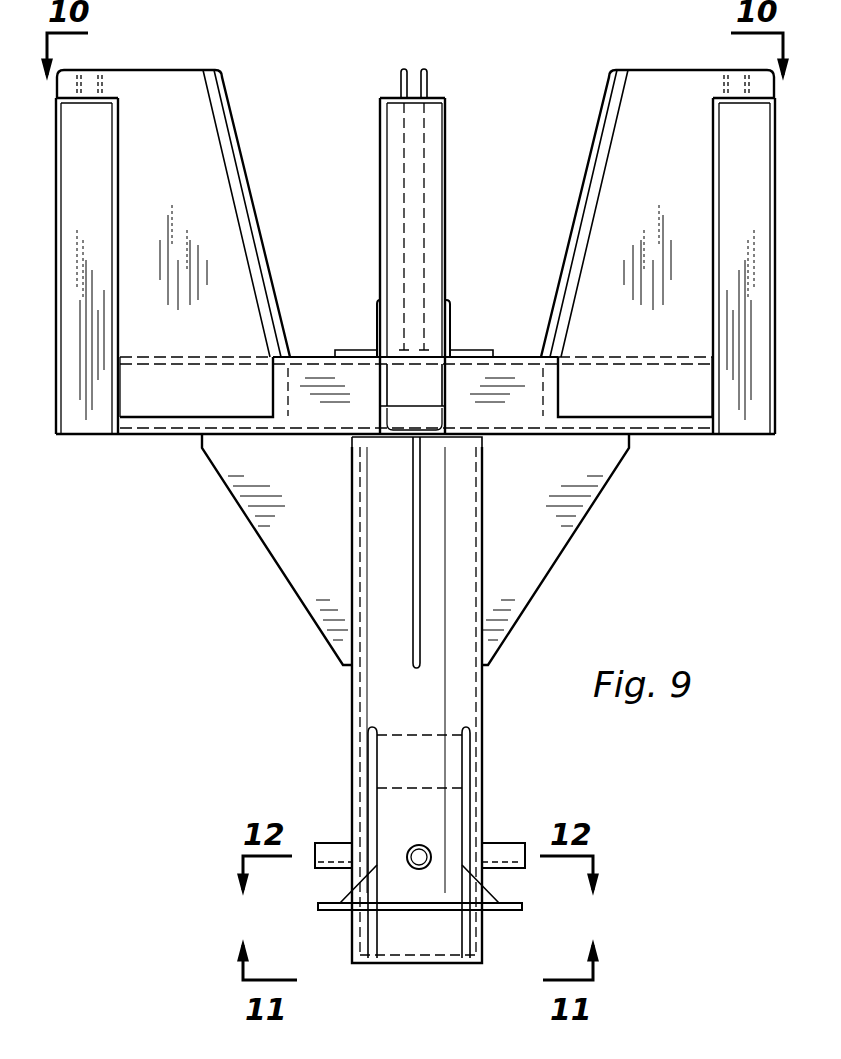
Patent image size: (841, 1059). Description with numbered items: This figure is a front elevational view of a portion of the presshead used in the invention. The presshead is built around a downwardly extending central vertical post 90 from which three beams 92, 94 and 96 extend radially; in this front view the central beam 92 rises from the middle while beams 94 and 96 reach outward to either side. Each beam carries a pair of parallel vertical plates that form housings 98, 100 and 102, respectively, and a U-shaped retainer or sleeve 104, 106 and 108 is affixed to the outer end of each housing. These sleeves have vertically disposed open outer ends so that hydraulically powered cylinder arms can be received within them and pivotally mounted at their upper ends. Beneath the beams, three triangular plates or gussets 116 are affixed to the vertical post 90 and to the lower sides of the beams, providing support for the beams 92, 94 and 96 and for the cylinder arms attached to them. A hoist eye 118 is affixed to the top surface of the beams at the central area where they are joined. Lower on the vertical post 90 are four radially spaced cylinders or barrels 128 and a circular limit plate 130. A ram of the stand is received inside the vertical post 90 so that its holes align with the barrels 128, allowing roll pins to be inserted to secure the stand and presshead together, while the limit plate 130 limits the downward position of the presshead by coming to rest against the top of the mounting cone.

The central vertical post 90 is at (450, 708).
The radially extending beam 92 is at (432, 410).
The radially extending beam 94 is at (662, 436).
The radially extending beam 96 is at (152, 436).
The housing 98 is at (425, 69).
The housing 100 is at (635, 112).
The housing 102 is at (221, 100).
The U-shaped retainer or sleeve 104 is at (432, 194).
The U-shaped retainer or sleeve 106 is at (745, 410).
The U-shaped retainer or sleeve 108 is at (84, 414).
The triangular plates or gussets 116 is at (298, 537).
The hoist eye 118 is at (452, 318).
The cylinders or barrels 128 is at (322, 855).
The circular limit plate 130 is at (509, 911).